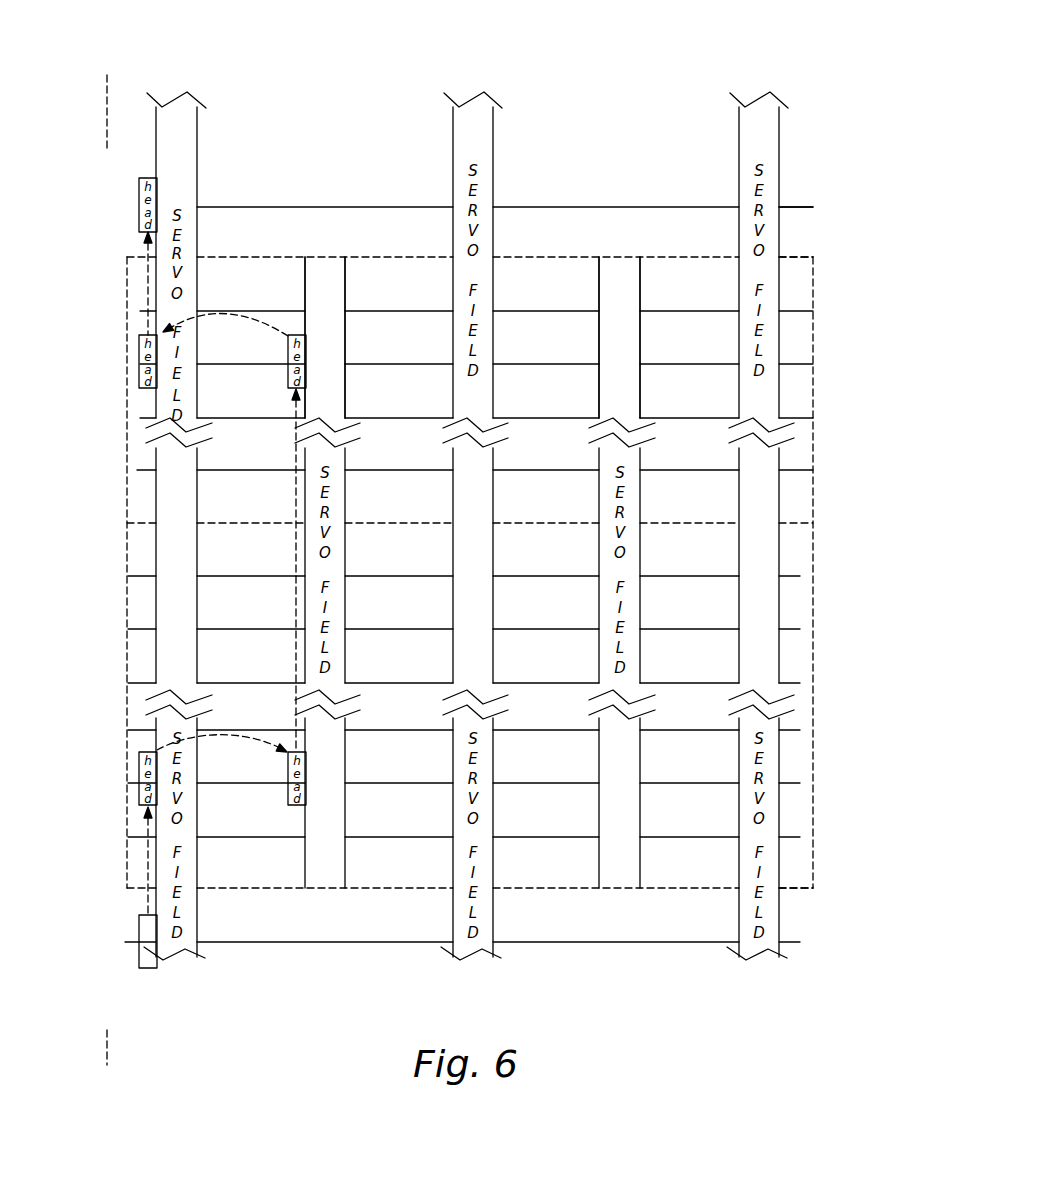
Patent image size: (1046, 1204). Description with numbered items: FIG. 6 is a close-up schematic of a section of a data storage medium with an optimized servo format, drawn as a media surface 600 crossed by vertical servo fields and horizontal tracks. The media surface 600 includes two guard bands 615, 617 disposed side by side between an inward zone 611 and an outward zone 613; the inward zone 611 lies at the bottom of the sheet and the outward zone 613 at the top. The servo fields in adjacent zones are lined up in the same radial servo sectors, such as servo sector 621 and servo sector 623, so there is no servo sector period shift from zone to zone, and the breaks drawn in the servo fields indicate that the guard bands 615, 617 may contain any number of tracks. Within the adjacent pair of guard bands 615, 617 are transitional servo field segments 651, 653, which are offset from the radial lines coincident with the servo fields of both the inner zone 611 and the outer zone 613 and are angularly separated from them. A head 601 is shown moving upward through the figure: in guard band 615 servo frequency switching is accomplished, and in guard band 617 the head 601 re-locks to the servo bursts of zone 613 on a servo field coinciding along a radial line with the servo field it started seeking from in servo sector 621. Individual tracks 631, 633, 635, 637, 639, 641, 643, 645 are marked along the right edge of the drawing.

The media surface 600 is at (734, 46).
The head 601 is at (139, 928).
The inward zone 611 is at (127, 888).
The outward zone 613 is at (127, 257).
The guard band 615 is at (127, 523).
The guard band 617 is at (127, 258).
The servo sector 621 is at (357, 970).
The second servo field pair 623 is at (643, 960).
The data track 631 is at (822, 888).
The data track 633 is at (822, 837).
The data track 635 is at (822, 783).
The data track 637 is at (822, 365).
The data track 639 is at (822, 312).
The data track 641 is at (822, 259).
The data track 643 is at (822, 208).
The data track 645 is at (822, 157).
The transitional servo field segment 651 is at (346, 287).
The transitional servo field segment 653 is at (641, 296).